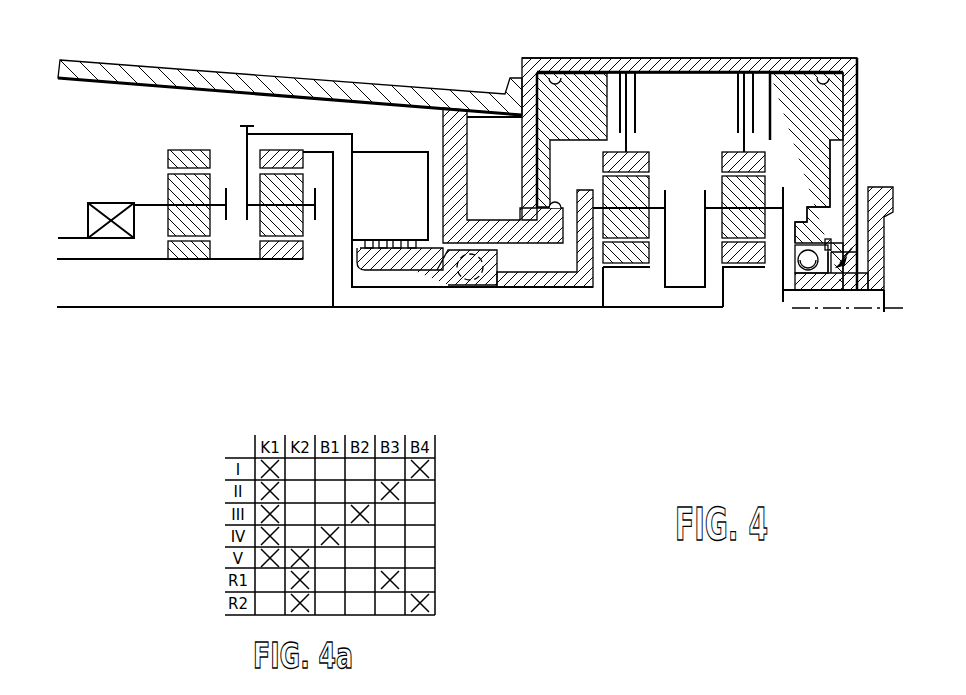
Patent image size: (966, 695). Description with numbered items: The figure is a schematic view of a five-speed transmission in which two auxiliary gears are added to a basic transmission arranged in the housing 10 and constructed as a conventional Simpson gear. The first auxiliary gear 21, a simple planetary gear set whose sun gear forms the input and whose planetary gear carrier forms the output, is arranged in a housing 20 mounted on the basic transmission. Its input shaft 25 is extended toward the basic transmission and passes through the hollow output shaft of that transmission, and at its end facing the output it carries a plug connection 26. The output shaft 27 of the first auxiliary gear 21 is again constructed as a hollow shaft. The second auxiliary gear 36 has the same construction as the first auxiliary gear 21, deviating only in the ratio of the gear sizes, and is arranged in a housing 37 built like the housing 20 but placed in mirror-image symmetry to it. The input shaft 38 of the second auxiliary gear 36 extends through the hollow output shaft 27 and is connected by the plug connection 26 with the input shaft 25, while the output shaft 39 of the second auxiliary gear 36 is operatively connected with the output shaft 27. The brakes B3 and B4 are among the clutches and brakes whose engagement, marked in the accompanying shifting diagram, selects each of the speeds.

The housing 10 is at (258, 93).
The housing 20 is at (592, 66).
The first auxiliary gear 21 is at (654, 152).
The input shaft 25 is at (478, 309).
The plug connection 26 is at (603, 309).
The output shaft 27 is at (682, 288).
The second auxiliary gear 36 is at (785, 182).
The housing 37 is at (777, 62).
The input shaft 38 is at (680, 309).
The output shaft 39 is at (820, 292).
The brake B3 is at (639, 112).
The brake B4 is at (734, 112).